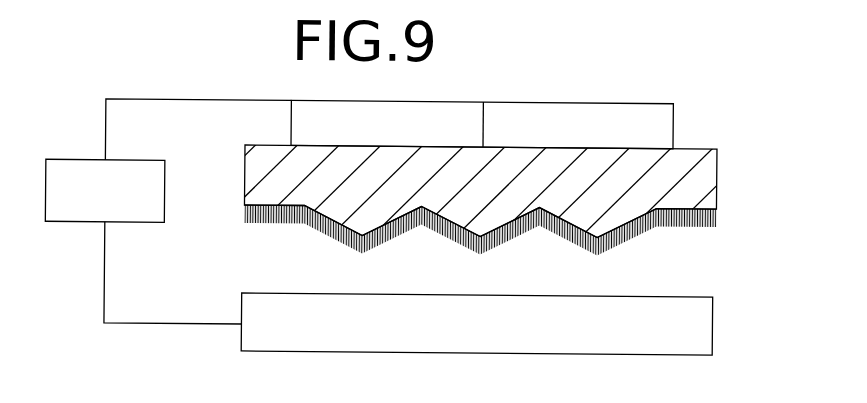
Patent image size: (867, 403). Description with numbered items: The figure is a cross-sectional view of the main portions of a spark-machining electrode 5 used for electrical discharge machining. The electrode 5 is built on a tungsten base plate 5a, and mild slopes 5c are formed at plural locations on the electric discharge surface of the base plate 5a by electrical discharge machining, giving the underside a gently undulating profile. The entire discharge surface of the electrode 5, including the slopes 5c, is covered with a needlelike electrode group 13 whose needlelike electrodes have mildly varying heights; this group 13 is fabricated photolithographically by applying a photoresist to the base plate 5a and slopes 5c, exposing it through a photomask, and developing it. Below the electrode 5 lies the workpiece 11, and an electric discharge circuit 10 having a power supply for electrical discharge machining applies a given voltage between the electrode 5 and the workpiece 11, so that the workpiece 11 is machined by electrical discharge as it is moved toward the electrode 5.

The spark-machining electrode 5 is at (723, 147).
The tungsten base plate 5a is at (703, 174).
The mild slopes 5c is at (343, 212).
The electric discharge circuit 10 is at (80, 161).
The workpiece 11 is at (706, 318).
The needlelike electrode group 13 is at (713, 218).